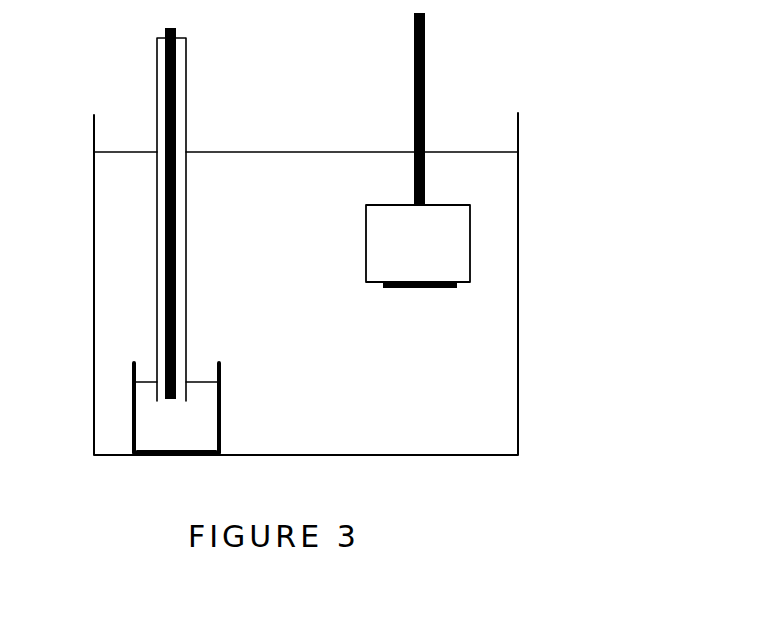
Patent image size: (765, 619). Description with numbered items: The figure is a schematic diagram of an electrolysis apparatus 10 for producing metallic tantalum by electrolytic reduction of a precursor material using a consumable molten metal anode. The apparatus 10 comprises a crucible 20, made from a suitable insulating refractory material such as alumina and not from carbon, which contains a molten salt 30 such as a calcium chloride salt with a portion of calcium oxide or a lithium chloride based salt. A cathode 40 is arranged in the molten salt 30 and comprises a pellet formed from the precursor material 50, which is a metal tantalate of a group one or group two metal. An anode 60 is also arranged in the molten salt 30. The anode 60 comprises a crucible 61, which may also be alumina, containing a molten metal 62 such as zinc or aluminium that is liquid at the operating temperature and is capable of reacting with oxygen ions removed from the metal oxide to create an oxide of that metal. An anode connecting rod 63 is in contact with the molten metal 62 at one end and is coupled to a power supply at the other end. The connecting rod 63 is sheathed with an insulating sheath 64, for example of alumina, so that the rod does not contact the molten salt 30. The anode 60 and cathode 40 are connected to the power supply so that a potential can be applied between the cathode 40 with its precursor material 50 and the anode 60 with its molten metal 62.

The electrolysis apparatus 10 is at (644, 188).
The crucible 20 is at (520, 413).
The molten salt 30 is at (112, 267).
The cathode 40 is at (426, 125).
The precursor material 50 is at (390, 250).
The anode 60 is at (187, 113).
The crucible 61 is at (220, 407).
The molten metal 62 is at (160, 437).
The anode connecting rod 63 is at (177, 280).
The insulating sheath 64 is at (160, 103).